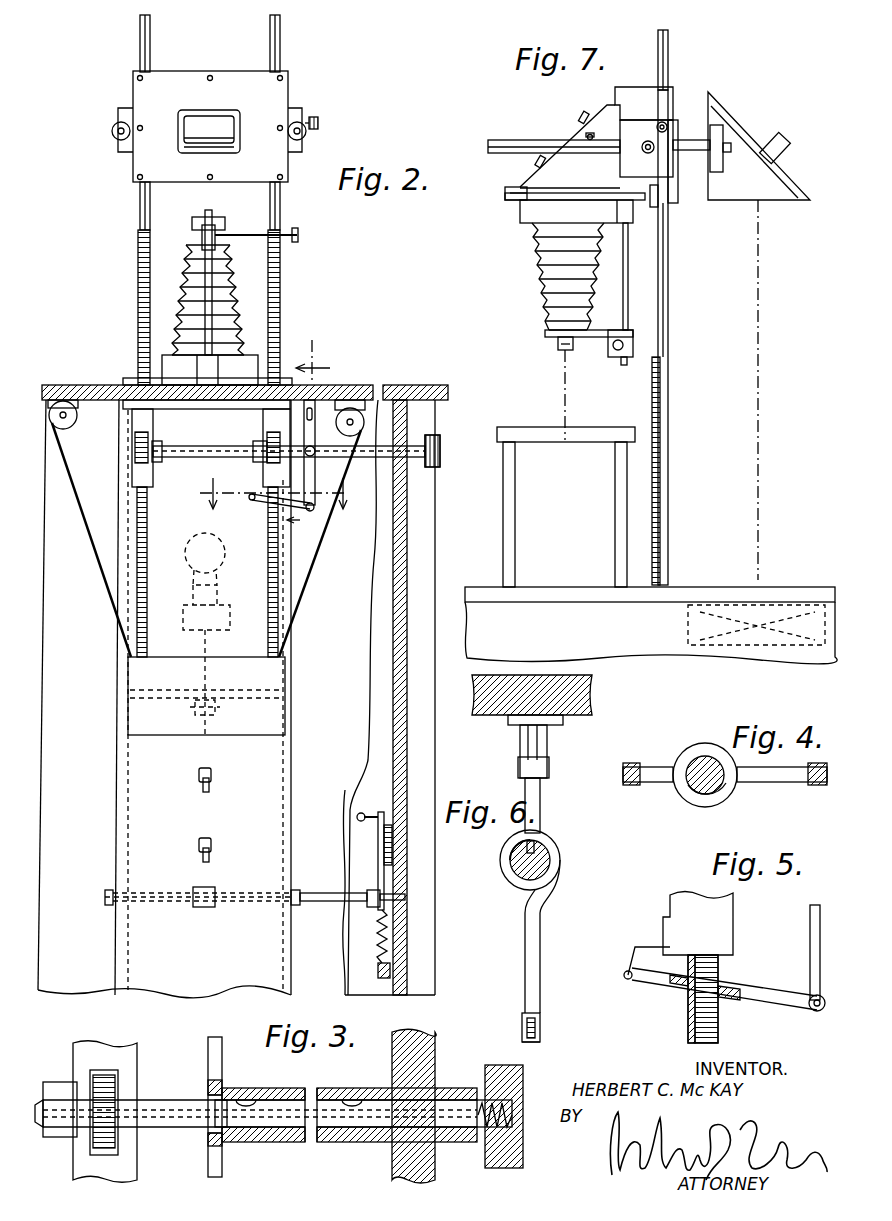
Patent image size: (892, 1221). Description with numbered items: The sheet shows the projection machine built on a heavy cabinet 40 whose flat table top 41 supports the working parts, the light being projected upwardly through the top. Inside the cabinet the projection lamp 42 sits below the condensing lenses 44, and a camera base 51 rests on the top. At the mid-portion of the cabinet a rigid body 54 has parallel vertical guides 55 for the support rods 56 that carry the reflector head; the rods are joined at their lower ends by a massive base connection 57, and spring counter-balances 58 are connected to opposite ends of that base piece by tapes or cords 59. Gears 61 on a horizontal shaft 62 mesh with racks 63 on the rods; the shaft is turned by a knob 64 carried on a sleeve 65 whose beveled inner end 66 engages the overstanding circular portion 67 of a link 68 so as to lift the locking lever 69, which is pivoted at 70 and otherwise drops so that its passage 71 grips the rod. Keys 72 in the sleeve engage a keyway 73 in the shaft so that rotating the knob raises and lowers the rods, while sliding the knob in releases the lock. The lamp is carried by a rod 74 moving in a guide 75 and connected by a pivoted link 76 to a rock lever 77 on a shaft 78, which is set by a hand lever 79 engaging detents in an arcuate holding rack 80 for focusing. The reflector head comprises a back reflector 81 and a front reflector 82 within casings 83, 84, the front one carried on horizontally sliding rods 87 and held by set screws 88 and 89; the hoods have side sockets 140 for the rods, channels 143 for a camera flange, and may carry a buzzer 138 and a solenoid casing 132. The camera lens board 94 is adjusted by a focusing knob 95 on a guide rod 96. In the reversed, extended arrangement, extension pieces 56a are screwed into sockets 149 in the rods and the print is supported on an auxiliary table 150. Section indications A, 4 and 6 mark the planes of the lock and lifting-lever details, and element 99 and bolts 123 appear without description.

In FIG. 2, the cabinet 40 is at (410, 522).
In FIG. 7, the cabinet 40 is at (651, 633).
In FIG. 2, the table top 41 is at (413, 388).
In FIG. 7, the table top 41 is at (680, 592).
In FIG. 2, the projection lamp 42 is at (192, 543).
In FIG. 7, the condensing lenses 44 is at (768, 612).
In FIG. 2, the camera base 51 is at (177, 368).
In FIG. 7, the camera base 51 is at (535, 225).
In FIG. 2, the casting or body 54 is at (242, 408).
In FIG. 5, the casting or body 54 is at (690, 902).
In FIG. 2, the vertical guides 55 is at (266, 425).
In FIG. 2, the support rods 56 is at (139, 220).
In FIG. 7, the support rods 56 is at (668, 330).
In FIG. 2, the extension pieces 56a is at (270, 43).
In FIG. 7, the extension pieces 56a is at (668, 53).
In FIG. 2, the strut or base connection 57 is at (185, 725).
In FIG. 2, the spring counter-balances 58 is at (352, 407).
In FIG. 2, the tapes or cords 59 is at (100, 543).
In FIG. 2, the gears 61 is at (136, 452).
In FIG. 3, the gears 61 is at (115, 1087).
In FIG. 2, the horizontal shaft 62 is at (208, 454).
In FIG. 6, the horizontal shaft 62 is at (516, 873).
In FIG. 3, the horizontal shaft 62 is at (158, 1128).
In FIG. 2, the racks 63 is at (139, 300).
In FIG. 7, the racks 63 is at (652, 403).
In FIG. 4, the racks 63 is at (720, 786).
In FIG. 5, the racks 63 is at (688, 1033).
In FIG. 2, the knob 64 is at (440, 440).
In FIG. 6, the knob 64 is at (503, 1064).
In FIG. 3, the knob 64 is at (502, 1066).
In FIG. 2, the sleeve 65 is at (438, 454).
In FIG. 6, the sleeve 65 is at (553, 862).
In FIG. 3, the sleeve 65 is at (458, 1140).
In FIG. 3, the beveled inner end 66 is at (215, 1133).
In FIG. 2, the overstanding circular portion 67 is at (313, 450).
In FIG. 6, the overstanding circular portion 67 is at (501, 862).
In FIG. 3, the overstanding circular portion 67 is at (207, 1085).
In FIG. 2, the link 68 is at (316, 505).
In FIG. 6, the link 68 is at (526, 955).
In FIG. 4, the link 68 is at (815, 786).
In FIG. 5, the link 68 is at (810, 950).
In FIG. 3, the link 68 is at (226, 1040).
In FIG. 2, the locking lever 69 is at (259, 503).
In FIG. 6, the locking lever 69 is at (523, 1033).
In FIG. 4, the locking lever 69 is at (777, 777).
In FIG. 5, the locking lever 69 is at (774, 1000).
In FIG. 5, the pivot 70 is at (628, 978).
In FIG. 4, the passage 71 is at (693, 761).
In FIG. 5, the passage 71 is at (683, 985).
In FIG. 6, the keys 72 is at (541, 841).
In FIG. 3, the keys 72 is at (247, 1094).
In FIG. 3, the keyway 73 is at (325, 1101).
In FIG. 2, the rod 74 is at (210, 645).
In FIG. 2, the guide 75 is at (218, 713).
In FIG. 2, the pivoted link 76 is at (212, 812).
In FIG. 2, the rock lever 77 is at (212, 865).
In FIG. 2, the shaft 78 is at (328, 903).
In FIG. 2, the hand lever 79 is at (378, 842).
In FIG. 2, the holding rack 80 is at (382, 912).
In FIG. 7, the back reflector 81 is at (588, 134).
In FIG. 7, the front reflector 82 is at (718, 112).
In FIG. 7, the casing 83 is at (570, 146).
In FIG. 2, the casing 84 is at (263, 98).
In FIG. 7, the casing 84 is at (759, 146).
In FIG. 2, the horizontally sliding rods 87 is at (118, 124).
In FIG. 7, the horizontally sliding rods 87 is at (500, 141).
In FIG. 7, the set screws 88 is at (667, 125).
In FIG. 7, the set screws 89 is at (646, 143).
In FIG. 7, the lens board or plate 94 is at (557, 347).
In FIG. 2, the focusing knob 95 is at (299, 233).
In FIG. 7, the focusing knob 95 is at (621, 358).
In FIG. 2, the guide rod 96 is at (207, 282).
In FIG. 7, the guide rod 96 is at (625, 305).
In FIG. 2, the clamp block 99 is at (193, 223).
In FIG. 7, the bolt 123 is at (584, 112).
In FIG. 7, the casing 132 is at (646, 95).
In FIG. 2, the buzzer 138 is at (212, 122).
In FIG. 7, the buzzer 138 is at (783, 147).
In FIG. 2, the side sockets 140 is at (116, 142).
In FIG. 7, the side sockets 140 is at (713, 150).
In FIG. 7, the channels 143 is at (521, 192).
In FIG. 7, the sockets 149 is at (660, 223).
In FIG. 7, the auxiliary table 150 is at (532, 436).
In FIG. 2, the section line 6 is at (308, 433).
In FIG. 2, the section line 4 is at (351, 493).
In FIG. 2, the section line A is at (262, 493).